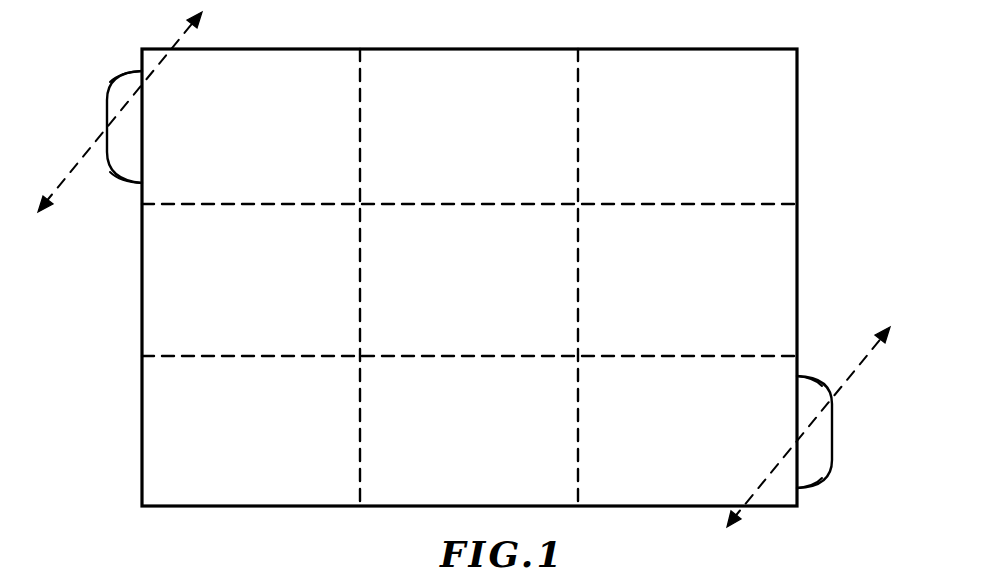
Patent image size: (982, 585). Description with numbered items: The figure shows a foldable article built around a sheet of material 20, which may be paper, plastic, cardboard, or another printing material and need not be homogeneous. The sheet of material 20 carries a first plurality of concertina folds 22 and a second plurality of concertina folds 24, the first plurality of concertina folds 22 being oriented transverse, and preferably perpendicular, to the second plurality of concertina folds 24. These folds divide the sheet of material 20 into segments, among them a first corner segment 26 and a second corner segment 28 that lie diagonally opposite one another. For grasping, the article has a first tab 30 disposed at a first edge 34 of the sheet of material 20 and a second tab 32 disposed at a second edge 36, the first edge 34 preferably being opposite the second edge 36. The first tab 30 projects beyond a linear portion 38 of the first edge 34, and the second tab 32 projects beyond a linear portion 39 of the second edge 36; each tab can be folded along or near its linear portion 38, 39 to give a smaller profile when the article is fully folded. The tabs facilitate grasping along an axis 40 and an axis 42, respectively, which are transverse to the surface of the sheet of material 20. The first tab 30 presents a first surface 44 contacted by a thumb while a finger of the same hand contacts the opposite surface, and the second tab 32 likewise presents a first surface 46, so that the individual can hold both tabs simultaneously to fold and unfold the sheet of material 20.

The sheet of material 20 is at (758, 46).
The first plurality of concertina folds 22 is at (775, 203).
The second plurality of concertina folds 24 is at (360, 73).
The first corner segment 26 is at (232, 60).
The second corner segment 28 is at (662, 490).
The first tab 30 is at (107, 107).
The second tab 32 is at (832, 437).
The first edge 34 is at (142, 332).
The second edge 36 is at (797, 238).
The linear portion 38 is at (142, 78).
The linear portion 39 is at (798, 462).
The axis 40 is at (83, 159).
The axis 42 is at (848, 383).
The first surface 44 is at (130, 167).
The first surface 46 is at (807, 386).